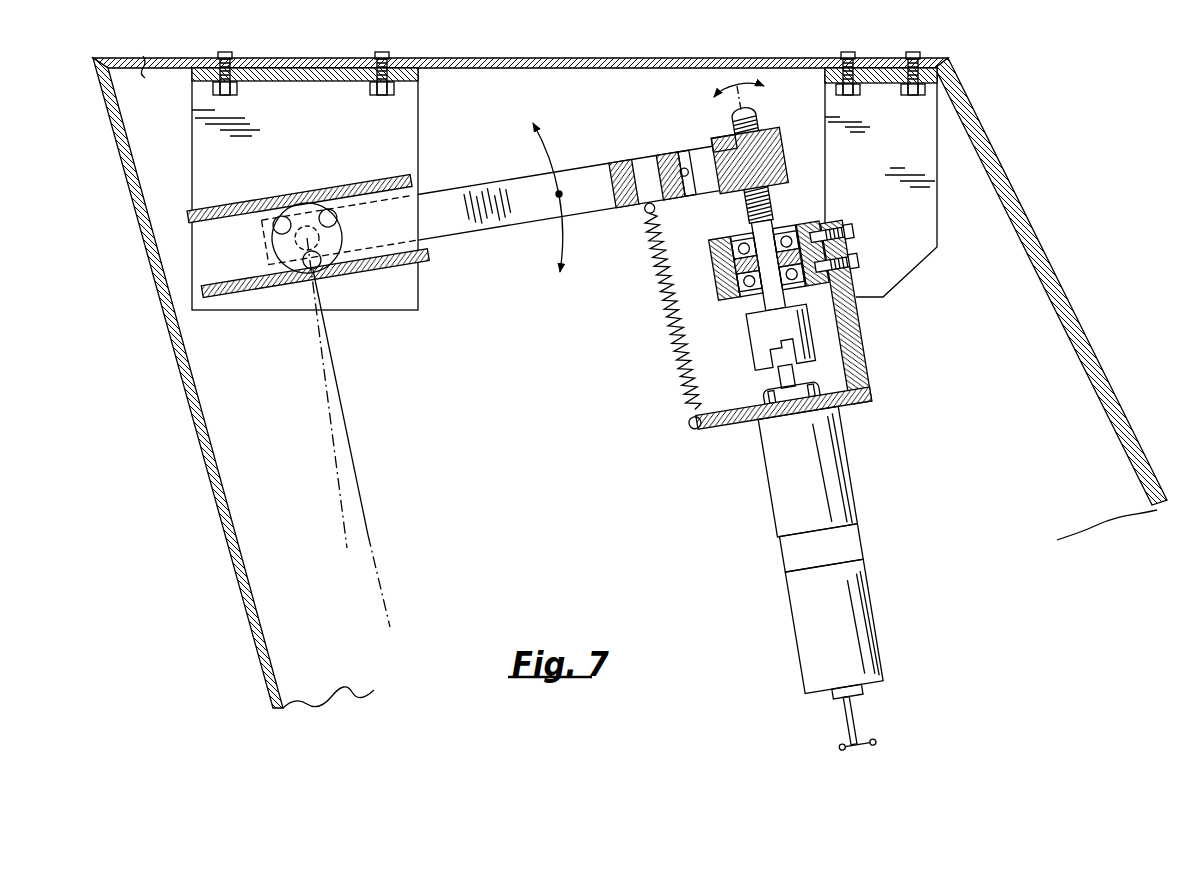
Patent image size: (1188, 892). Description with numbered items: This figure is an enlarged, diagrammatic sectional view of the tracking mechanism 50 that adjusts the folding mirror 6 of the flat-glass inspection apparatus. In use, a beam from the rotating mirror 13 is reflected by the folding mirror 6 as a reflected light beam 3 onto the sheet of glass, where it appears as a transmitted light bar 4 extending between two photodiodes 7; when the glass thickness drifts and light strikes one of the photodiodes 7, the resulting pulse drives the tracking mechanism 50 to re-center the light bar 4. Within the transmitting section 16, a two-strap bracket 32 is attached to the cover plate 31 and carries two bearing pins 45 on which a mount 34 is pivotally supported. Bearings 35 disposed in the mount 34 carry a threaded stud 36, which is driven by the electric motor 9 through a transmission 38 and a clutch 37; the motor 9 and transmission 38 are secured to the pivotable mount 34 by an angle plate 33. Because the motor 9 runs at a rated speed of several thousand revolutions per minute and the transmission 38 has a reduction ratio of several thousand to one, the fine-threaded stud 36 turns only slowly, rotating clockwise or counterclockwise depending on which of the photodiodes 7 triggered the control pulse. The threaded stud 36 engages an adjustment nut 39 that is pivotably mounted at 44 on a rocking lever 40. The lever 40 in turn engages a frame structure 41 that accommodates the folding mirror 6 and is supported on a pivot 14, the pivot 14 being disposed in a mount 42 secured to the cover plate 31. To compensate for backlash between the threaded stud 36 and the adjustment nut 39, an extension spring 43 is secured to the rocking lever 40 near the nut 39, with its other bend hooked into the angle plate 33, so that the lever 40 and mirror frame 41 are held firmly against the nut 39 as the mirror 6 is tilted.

The reflected light beam 3 is at (370, 495).
The transmitted light bar 4 is at (391, 629).
The folding mirror 6 is at (363, 273).
The photodiodes 7 is at (840, 757).
The electric motor 9 is at (800, 640).
The rotating mirror 13 is at (348, 556).
The pivot 14 is at (306, 230).
The transmitting section 16 is at (171, 485).
The cover plate 31 is at (543, 62).
The two-strap bracket 32 is at (907, 262).
The angle plate 33 is at (879, 408).
The mount 34 is at (712, 254).
The bearings 35 is at (785, 226).
The threaded stud 36 is at (759, 116).
The clutch 37 is at (755, 362).
The transmission 38 is at (780, 490).
The adjustment nut 39 is at (780, 141).
The rocking lever 40 is at (511, 190).
The frame structure 41 is at (378, 178).
The mount 42 is at (410, 297).
The extension spring 43 is at (675, 361).
The pivotable mounting of the adjustment nut 44 is at (722, 133).
The bearing pins 45 is at (737, 267).
The tracking mechanism 50 is at (586, 447).